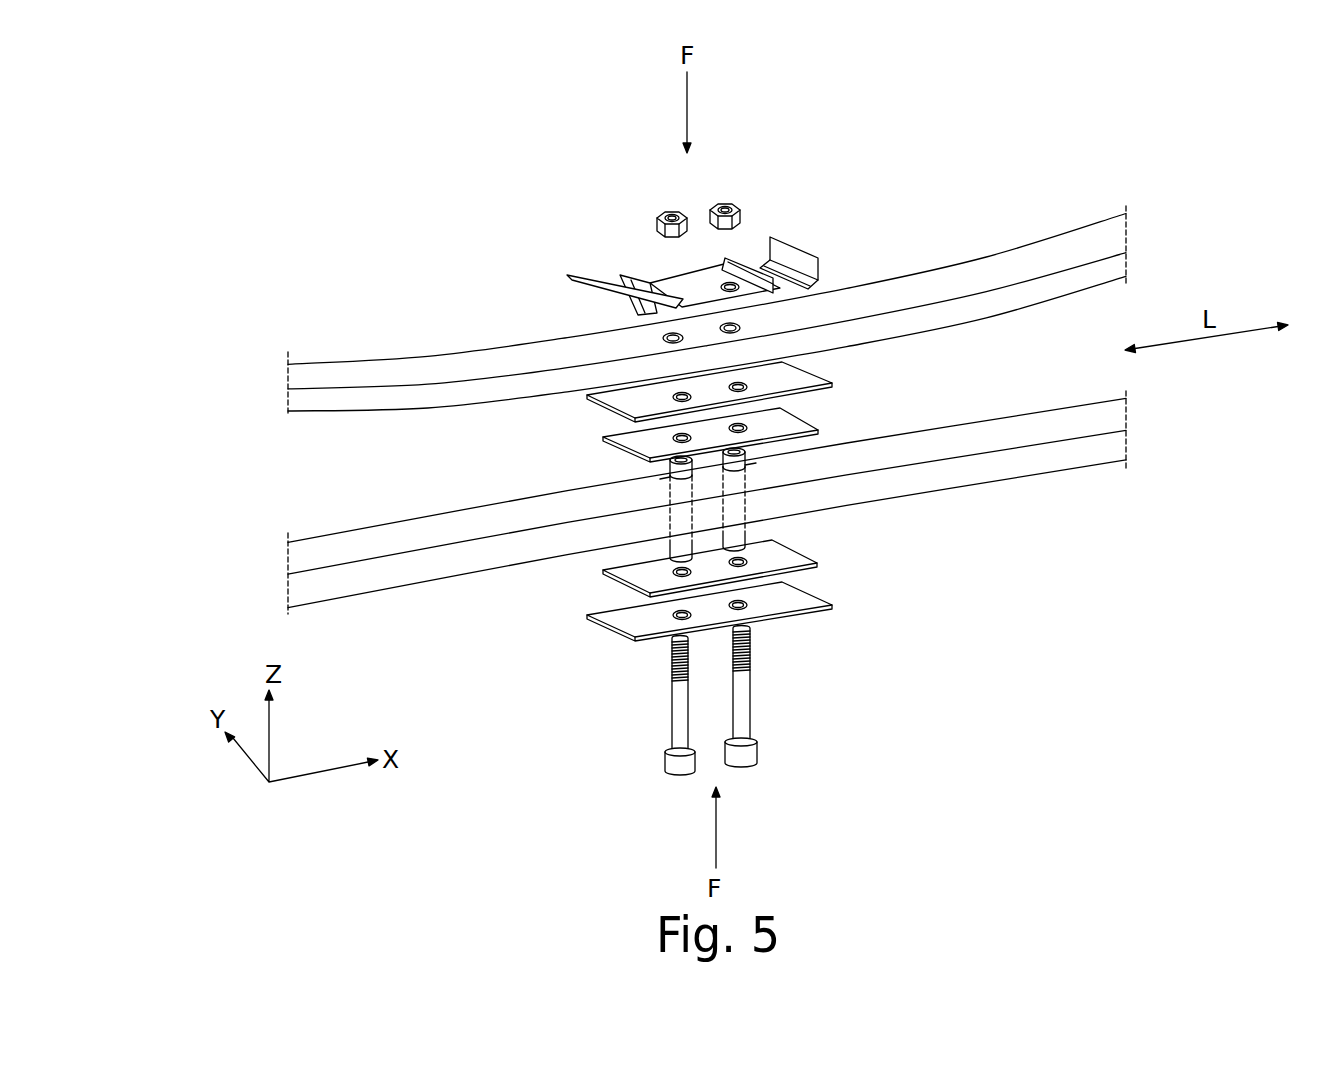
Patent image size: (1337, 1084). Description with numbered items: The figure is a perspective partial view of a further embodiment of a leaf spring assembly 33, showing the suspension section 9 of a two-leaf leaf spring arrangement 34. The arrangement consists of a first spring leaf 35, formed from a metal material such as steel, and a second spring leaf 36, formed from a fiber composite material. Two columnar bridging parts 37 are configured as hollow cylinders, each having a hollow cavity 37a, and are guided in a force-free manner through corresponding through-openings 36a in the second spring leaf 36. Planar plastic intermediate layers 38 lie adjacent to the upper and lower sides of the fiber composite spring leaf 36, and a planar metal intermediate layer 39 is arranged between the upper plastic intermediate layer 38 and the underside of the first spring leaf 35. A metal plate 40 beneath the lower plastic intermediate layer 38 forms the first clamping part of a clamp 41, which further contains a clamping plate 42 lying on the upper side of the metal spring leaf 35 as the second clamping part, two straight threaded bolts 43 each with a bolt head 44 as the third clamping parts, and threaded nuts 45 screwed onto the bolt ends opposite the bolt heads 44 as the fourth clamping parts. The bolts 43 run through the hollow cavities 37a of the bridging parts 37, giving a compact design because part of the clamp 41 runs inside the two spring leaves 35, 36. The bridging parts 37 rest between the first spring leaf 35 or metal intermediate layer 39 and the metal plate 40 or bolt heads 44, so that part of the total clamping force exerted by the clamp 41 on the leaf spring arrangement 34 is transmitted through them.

The suspension section 9 is at (492, 321).
The leaf spring assembly 33 is at (318, 231).
The two-leaf leaf spring arrangement 34 is at (232, 463).
The first spring leaf 35 is at (292, 372).
The second spring leaf 36 is at (292, 556).
The through-openings 36a is at (668, 485).
The bridging parts 37 is at (678, 552).
The hollow cavity 37a is at (668, 473).
The plastic intermediate layers 38 is at (790, 427).
The metal intermediate layer 39 is at (592, 398).
The metal plate 40 is at (800, 598).
The clamp 41 is at (790, 192).
The clamping plate 42 is at (807, 258).
The threaded bolts 43 is at (678, 697).
The bolt head 44 is at (670, 767).
The threaded nuts 45 is at (655, 222).